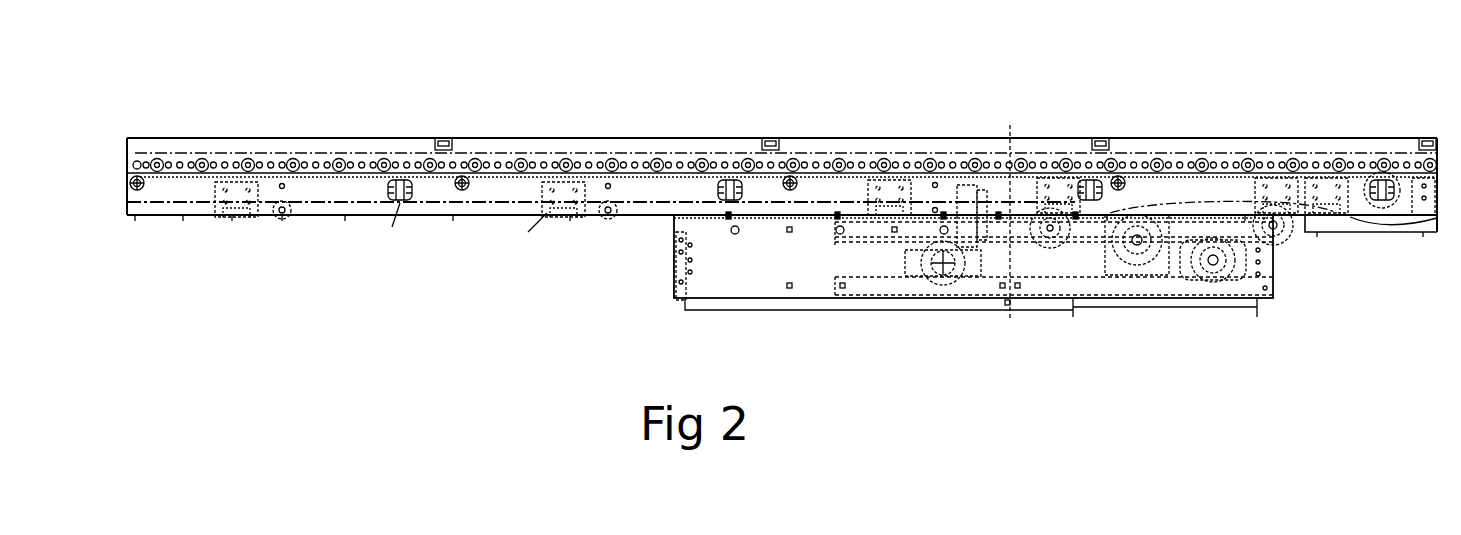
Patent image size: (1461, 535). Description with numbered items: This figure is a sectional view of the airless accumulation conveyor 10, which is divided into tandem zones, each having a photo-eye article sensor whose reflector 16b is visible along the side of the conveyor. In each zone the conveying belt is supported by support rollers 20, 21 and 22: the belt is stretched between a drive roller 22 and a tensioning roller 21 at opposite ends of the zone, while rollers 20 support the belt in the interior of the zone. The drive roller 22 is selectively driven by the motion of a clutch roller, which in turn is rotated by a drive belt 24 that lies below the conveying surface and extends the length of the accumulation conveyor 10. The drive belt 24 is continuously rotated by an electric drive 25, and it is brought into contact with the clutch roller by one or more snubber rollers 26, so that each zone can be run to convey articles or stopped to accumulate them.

The airless accumulation conveyor 10 is at (684, 129).
The reflector 16b is at (443, 140).
The support rollers 20 is at (305, 167).
The tensioning roller 21 is at (433, 153).
The drive roller 22 is at (140, 160).
The drive belt 24 is at (220, 153).
The electric drive 25 is at (1211, 302).
The snubber rollers 26 is at (133, 180).